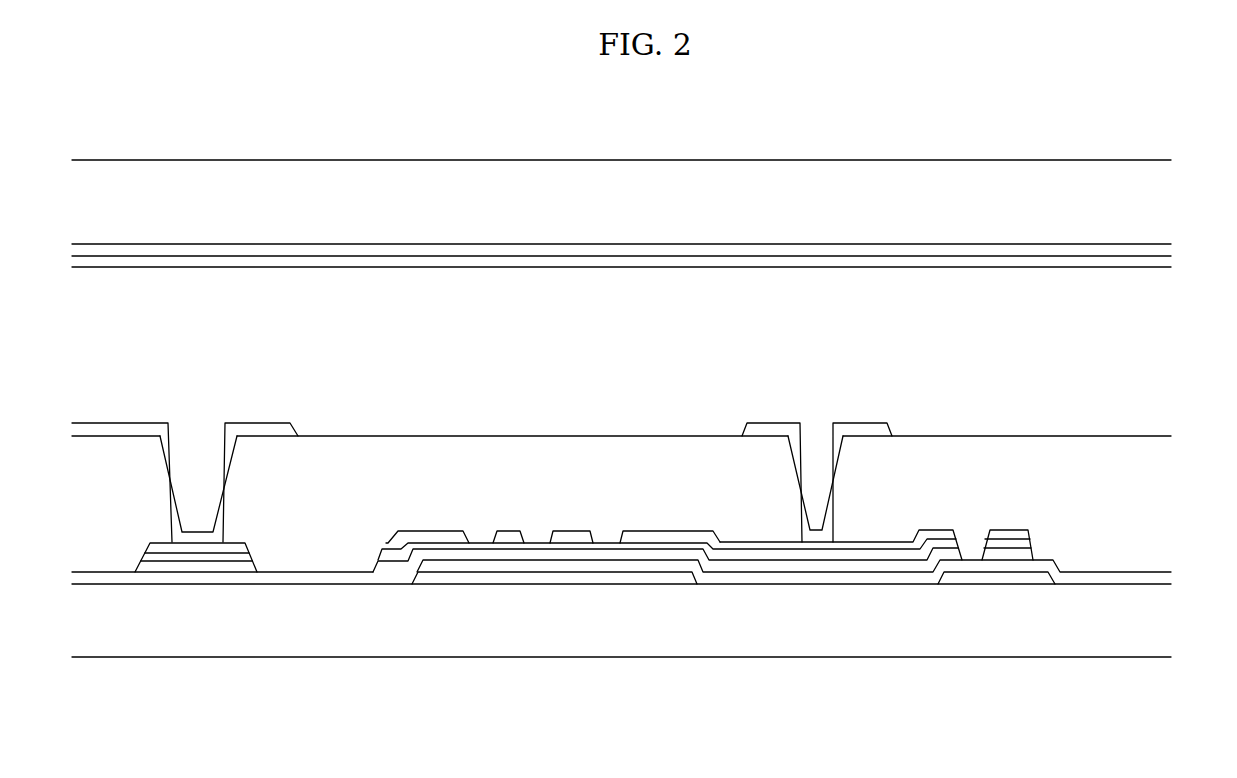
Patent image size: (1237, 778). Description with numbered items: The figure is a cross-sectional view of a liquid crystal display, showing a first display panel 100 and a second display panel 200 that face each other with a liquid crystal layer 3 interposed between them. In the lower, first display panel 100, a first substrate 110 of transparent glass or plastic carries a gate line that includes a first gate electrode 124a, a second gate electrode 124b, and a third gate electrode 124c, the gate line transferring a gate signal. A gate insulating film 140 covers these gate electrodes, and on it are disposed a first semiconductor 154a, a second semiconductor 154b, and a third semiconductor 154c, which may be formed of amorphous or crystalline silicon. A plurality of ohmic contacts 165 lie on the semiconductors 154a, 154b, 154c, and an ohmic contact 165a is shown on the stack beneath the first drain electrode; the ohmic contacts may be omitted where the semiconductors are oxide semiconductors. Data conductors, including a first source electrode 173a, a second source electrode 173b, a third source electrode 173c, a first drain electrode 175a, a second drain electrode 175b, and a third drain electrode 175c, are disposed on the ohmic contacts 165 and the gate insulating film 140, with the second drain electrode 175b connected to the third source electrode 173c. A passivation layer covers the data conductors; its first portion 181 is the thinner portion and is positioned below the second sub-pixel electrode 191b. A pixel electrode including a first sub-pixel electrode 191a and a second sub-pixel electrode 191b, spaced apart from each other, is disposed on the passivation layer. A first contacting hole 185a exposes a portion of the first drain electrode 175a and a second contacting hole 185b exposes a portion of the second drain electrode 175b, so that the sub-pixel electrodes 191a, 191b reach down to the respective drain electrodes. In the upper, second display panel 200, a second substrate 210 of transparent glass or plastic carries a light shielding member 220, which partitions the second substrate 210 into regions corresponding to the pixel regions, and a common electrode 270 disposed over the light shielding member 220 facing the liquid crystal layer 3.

The first display panel 100 is at (1176, 398).
The second display panel 200 is at (1176, 160).
The liquid crystal layer 3 is at (1176, 267).
The first substrate 110 is at (1100, 633).
The first gate electrode 124a is at (473, 578).
The second gate electrode 124b is at (607, 578).
The third gate electrode 124c is at (1030, 580).
The gate insulating film 140 is at (810, 580).
The first semiconductor 154a is at (455, 560).
The second semiconductor 154b is at (745, 567).
The third semiconductor 154c is at (970, 565).
The ohmic contacts 165 is at (390, 557).
The ohmic contact layer 165a is at (197, 565).
The first source electrode 173a is at (443, 535).
The second source electrode 173b is at (573, 535).
The third source electrode 173c is at (867, 547).
The first drain electrode 175a is at (508, 535).
The second drain electrode 175b is at (669, 535).
The third drain electrode 175c is at (1008, 533).
The first portion of the passivation layer 181 is at (978, 453).
The first contacting hole 185a is at (163, 462).
The second contacting hole 185b is at (840, 465).
The first sub-pixel electrode 191a is at (267, 430).
The second sub-pixel electrode 191b is at (762, 423).
The second substrate 210 is at (952, 180).
The light shielding member 220 is at (851, 250).
The common electrode 270 is at (745, 262).